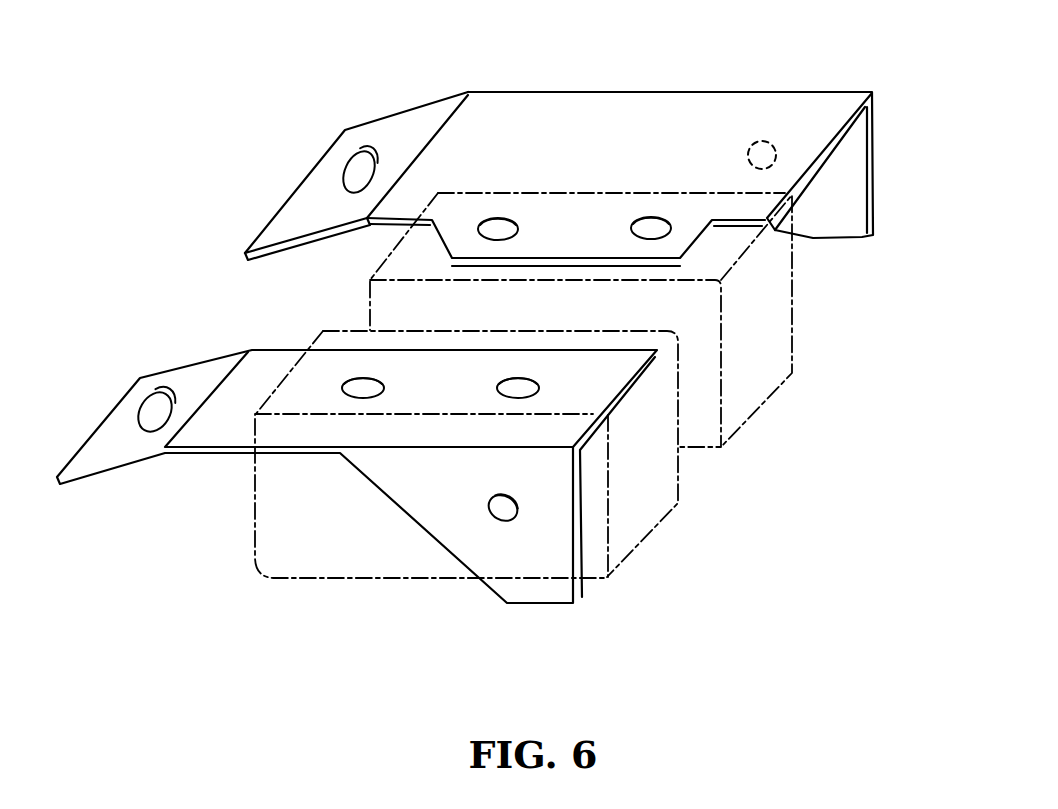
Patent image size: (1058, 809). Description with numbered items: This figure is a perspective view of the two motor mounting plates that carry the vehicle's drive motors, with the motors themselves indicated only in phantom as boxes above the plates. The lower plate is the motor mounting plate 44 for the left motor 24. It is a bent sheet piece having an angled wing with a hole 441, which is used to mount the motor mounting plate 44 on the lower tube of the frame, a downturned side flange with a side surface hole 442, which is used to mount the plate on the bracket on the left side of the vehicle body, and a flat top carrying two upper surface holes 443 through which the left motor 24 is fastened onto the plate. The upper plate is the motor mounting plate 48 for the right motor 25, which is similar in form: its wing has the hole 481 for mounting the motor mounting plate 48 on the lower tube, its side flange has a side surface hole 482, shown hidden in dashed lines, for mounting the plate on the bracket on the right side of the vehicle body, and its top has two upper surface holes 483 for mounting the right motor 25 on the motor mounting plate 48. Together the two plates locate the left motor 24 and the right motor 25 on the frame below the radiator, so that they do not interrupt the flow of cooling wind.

The left motor 24 is at (655, 530).
The right motor 25 is at (792, 330).
The motor mounting plate 44 is at (582, 532).
The hole 441 is at (158, 410).
The side surface hole 442 is at (503, 508).
The upper surface holes 443 is at (362, 395).
The motor mounting plate 48 is at (873, 167).
The hole 481 is at (363, 160).
The side surface hole 482 is at (767, 147).
The upper surface holes 483 is at (497, 227).